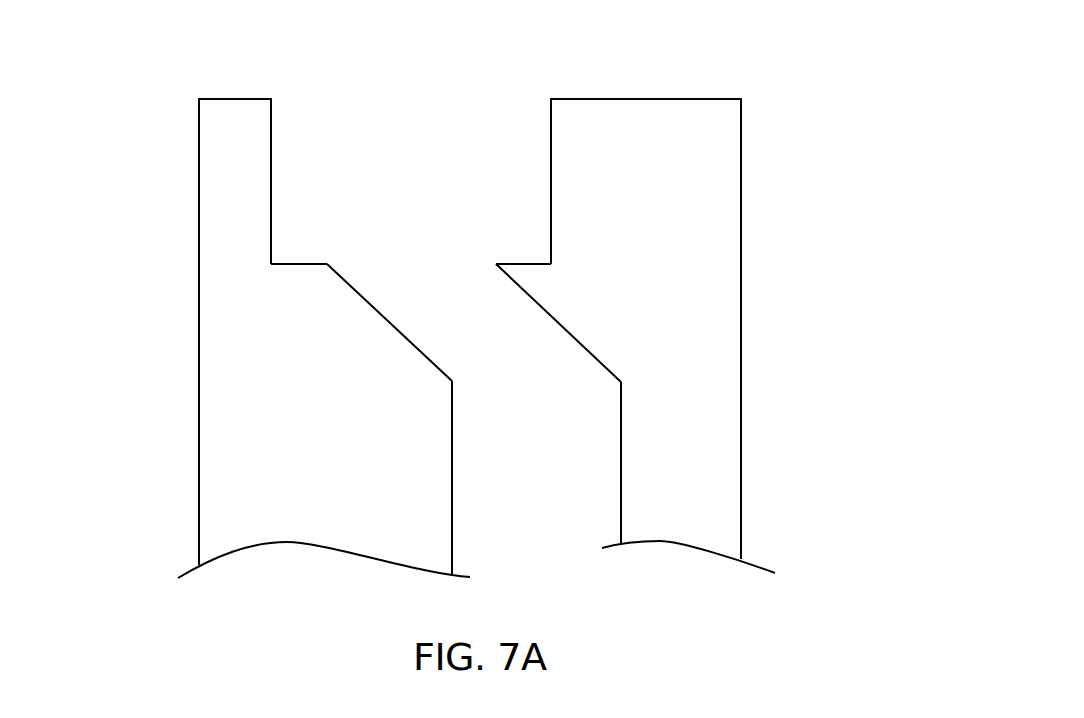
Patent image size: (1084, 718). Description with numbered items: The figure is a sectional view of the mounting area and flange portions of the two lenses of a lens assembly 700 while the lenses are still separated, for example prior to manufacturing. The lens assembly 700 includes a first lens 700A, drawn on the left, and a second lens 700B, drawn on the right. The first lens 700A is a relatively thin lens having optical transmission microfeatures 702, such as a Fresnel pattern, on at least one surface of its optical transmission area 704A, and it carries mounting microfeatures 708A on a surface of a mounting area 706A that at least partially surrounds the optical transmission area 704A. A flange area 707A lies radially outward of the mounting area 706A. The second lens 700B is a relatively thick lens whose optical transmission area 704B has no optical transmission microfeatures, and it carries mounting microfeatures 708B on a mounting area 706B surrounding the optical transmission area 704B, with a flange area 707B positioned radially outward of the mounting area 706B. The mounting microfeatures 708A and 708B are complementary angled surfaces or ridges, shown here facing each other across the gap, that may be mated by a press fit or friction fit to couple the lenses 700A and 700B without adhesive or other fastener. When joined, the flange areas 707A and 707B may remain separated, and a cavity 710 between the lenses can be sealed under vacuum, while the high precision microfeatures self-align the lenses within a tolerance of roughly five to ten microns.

The lens assembly 700 is at (501, 309).
The first lens 700A is at (247, 312).
The second lens 700B is at (664, 306).
The optical transmission microfeatures 702 is at (452, 500).
The optical transmission area 704A is at (152, 498).
The optical transmission area 704B is at (797, 497).
The mounting area 706A is at (156, 280).
The mounting area 706B is at (793, 278).
The flange area 707A is at (118, 150).
The flange area 707B is at (798, 130).
The mounting microfeatures 708A is at (376, 308).
The mounting microfeatures 708B is at (552, 318).
The cavity 710 is at (545, 447).